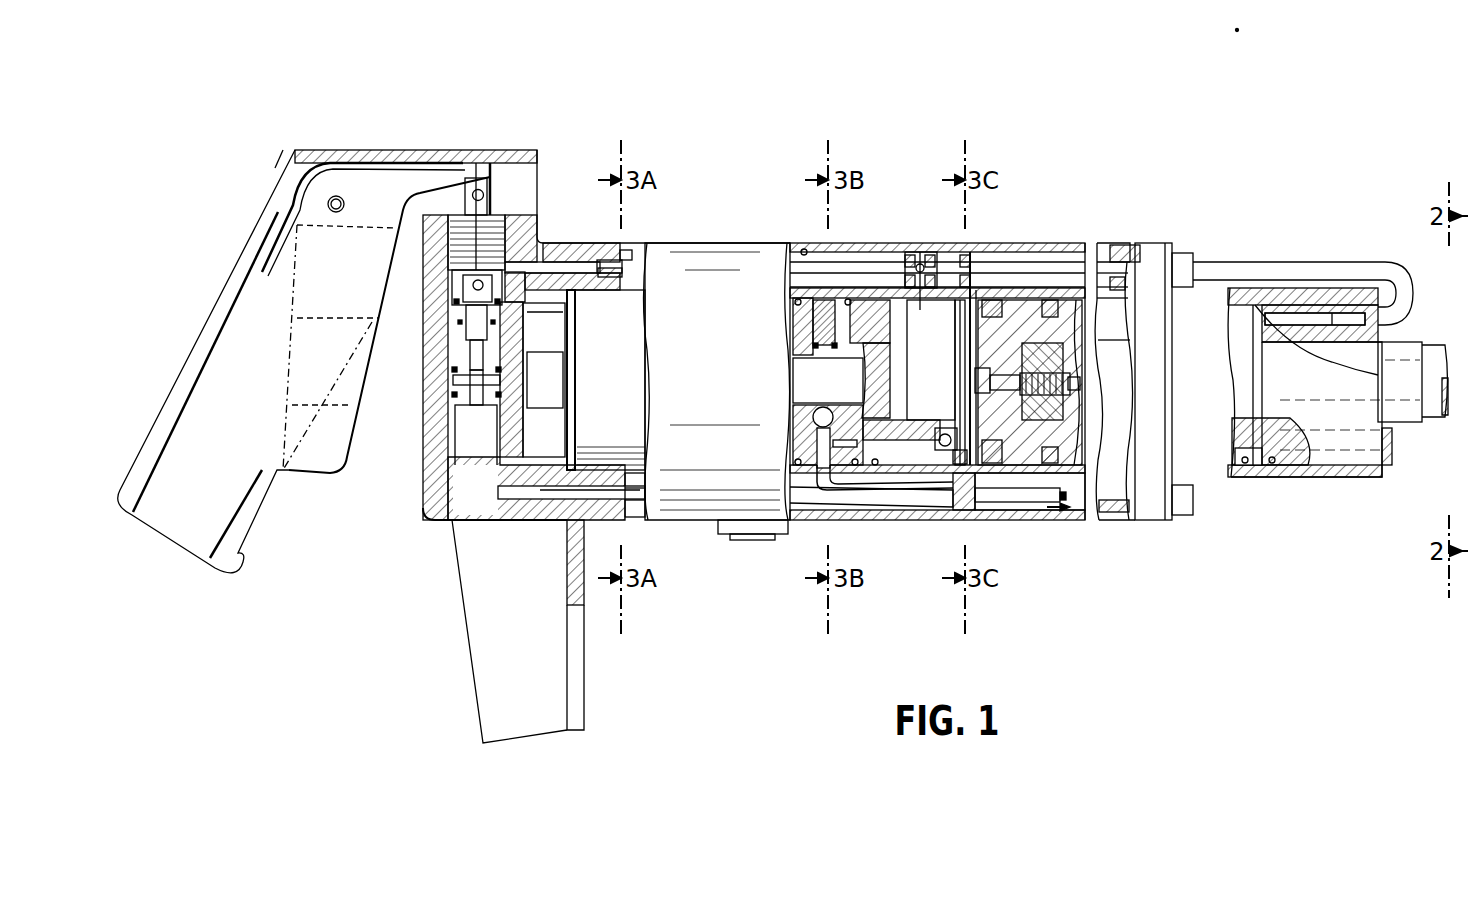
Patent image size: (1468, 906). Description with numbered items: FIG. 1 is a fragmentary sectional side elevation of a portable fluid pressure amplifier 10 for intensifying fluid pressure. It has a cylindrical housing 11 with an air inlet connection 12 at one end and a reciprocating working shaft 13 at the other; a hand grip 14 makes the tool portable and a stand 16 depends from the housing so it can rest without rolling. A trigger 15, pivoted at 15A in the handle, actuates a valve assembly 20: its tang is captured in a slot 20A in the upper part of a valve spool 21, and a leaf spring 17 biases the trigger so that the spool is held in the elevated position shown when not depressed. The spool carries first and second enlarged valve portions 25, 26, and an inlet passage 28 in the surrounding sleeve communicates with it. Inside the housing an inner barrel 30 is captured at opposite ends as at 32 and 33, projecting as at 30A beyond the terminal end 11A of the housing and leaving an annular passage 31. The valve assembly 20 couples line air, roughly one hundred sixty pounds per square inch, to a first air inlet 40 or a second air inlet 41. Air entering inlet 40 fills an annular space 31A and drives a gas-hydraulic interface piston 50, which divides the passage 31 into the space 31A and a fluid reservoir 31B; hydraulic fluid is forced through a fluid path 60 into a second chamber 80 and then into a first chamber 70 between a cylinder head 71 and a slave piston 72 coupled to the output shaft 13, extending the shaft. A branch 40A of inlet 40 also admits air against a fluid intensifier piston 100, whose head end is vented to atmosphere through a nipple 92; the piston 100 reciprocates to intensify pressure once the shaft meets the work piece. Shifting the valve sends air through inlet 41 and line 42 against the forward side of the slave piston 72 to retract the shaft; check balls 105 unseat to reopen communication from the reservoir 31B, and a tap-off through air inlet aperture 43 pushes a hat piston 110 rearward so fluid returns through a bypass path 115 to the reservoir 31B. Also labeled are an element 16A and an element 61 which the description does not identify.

The fluid pressure amplifier 10 is at (1110, 205).
The cylindrical housing 11 is at (714, 258).
The terminal end of the housing 11A is at (1175, 245).
The air inlet connection 12 is at (455, 385).
The working shaft 13 is at (1430, 352).
The hand grip 14 is at (245, 305).
The trigger 15 is at (317, 455).
The trigger pivot 15A is at (335, 195).
The stand 16 is at (575, 688).
The housing shell 16A is at (432, 185).
The leaf spring 17 is at (292, 213).
The valve assembly 20 is at (496, 165).
The slot 20A is at (481, 188).
The valve spool 21 is at (487, 203).
The first enlarged valve portion 25 is at (465, 298).
The second enlarged valve portion 26 is at (463, 485).
The inlet passage 28 is at (498, 320).
The inner barrel 30 is at (1050, 300).
The barrel projection 30A is at (1313, 288).
The annular passage 31 is at (800, 248).
The annular space 31A is at (935, 505).
The fluid reservoir 31B is at (1032, 510).
The barrel capture point 32 is at (1111, 250).
The barrel capture point 33 is at (583, 505).
The air inlet 40 is at (500, 505).
The branch of the air inlet 40A is at (525, 500).
The second air inlet 41 is at (565, 265).
The line 42 is at (1015, 260).
The air inlet aperture 43 is at (920, 250).
The gas-hydraulic interface piston 50 is at (966, 510).
The fluid path 60 is at (1067, 510).
The passage 61 is at (1015, 502).
The first chamber 70 is at (972, 300).
The cylinder head 71 is at (914, 379).
The slave piston 72 is at (1060, 300).
The second chamber 80 is at (845, 372).
The nipple 92 is at (757, 535).
The fluid intensifier piston 100 is at (632, 300).
The check balls 105 is at (946, 452).
The hat piston 110 is at (880, 465).
The bypass path 115 is at (843, 450).